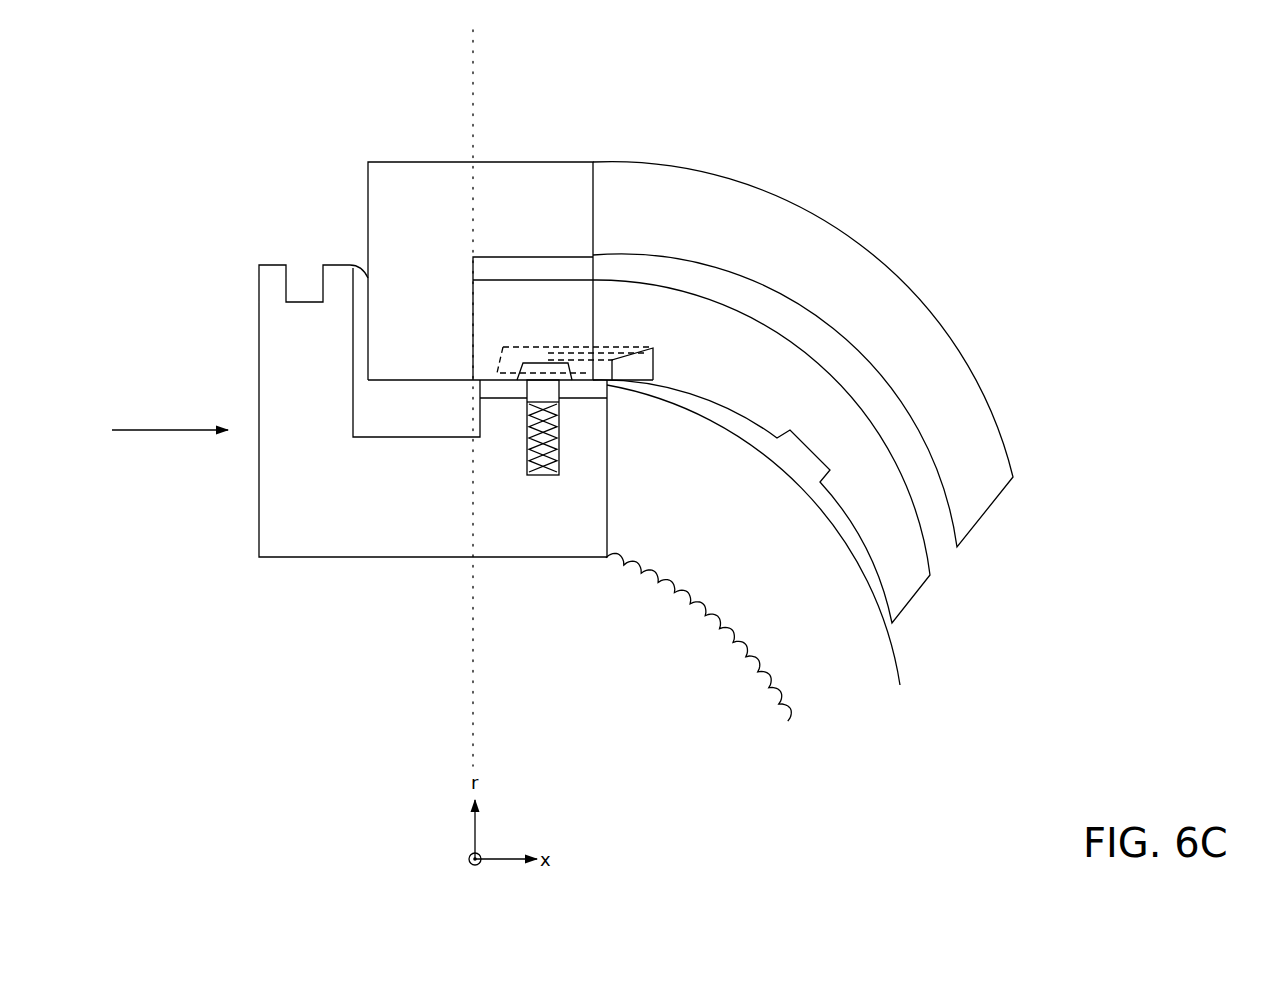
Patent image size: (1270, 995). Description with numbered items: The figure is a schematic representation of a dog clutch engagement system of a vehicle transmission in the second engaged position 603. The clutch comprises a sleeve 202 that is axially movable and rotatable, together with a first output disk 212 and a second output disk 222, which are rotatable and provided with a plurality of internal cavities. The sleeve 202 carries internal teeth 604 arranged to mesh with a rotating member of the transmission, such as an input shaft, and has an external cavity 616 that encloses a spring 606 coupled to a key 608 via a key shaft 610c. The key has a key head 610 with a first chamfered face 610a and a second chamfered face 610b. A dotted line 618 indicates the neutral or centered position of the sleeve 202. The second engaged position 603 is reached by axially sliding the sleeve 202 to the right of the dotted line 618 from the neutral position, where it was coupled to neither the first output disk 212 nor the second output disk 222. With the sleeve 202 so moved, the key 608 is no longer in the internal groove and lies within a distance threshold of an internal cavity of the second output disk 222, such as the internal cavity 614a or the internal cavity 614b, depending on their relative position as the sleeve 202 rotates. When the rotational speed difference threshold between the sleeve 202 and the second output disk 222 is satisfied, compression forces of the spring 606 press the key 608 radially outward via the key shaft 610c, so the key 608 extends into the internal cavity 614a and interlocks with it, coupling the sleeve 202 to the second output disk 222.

The sleeve 202 is at (456, 500).
The first output disk 212 is at (441, 210).
The second output disk 222 is at (554, 310).
The second engaged position 603 is at (853, 79).
The internal teeth 604 is at (663, 562).
The spring 606 is at (527, 449).
The key 608 is at (525, 405).
The key head 610 is at (540, 362).
The first chamfered face 610a is at (518, 358).
The second chamfered face 610b is at (598, 383).
The key shaft 610c is at (560, 399).
The internal cavity 614a is at (662, 353).
The internal cavity 614b is at (827, 454).
The external cavity 616 is at (569, 437).
The dotted line 618 is at (478, 112).